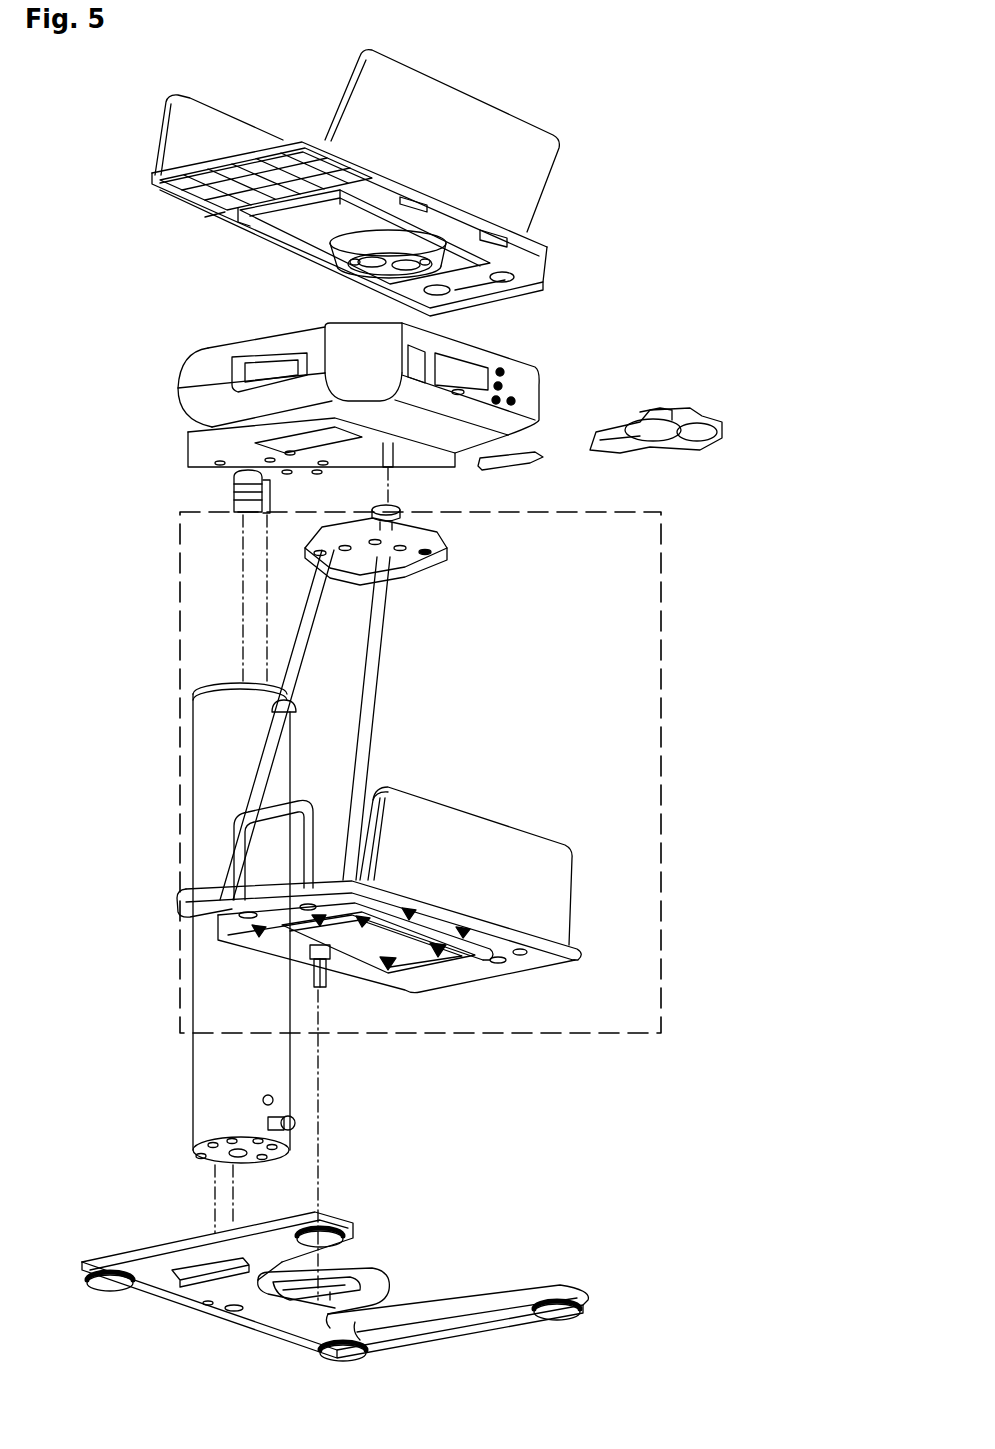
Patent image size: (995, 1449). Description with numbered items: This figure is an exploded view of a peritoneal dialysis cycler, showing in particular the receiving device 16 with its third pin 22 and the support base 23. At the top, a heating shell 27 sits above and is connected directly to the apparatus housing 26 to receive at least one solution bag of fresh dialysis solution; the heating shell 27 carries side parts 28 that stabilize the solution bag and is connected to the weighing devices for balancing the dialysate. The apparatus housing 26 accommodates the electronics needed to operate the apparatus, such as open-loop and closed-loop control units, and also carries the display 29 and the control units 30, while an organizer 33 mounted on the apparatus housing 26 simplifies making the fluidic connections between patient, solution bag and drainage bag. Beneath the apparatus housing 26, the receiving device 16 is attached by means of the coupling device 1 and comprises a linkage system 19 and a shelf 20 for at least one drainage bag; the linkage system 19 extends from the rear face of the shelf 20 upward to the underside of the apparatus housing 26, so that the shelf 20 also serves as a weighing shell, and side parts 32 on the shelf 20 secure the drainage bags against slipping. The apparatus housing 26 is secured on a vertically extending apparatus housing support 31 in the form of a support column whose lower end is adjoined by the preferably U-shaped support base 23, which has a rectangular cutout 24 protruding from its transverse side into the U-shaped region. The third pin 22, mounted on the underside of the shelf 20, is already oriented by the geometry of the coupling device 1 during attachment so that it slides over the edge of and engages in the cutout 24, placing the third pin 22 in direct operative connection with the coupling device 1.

The coupling device 1 is at (395, 506).
The receiving device 16 is at (663, 692).
The linkage system 19 is at (380, 652).
The shelf 20 is at (573, 945).
The third pin 22 is at (330, 977).
The support base 23 is at (507, 1295).
The rectangular cutout 24 is at (340, 1278).
The apparatus housing 26 is at (207, 398).
The heating shell 27 is at (545, 265).
The side parts 28 is at (490, 140).
The display 29 is at (453, 410).
The control units 30 is at (517, 400).
The apparatus housing support 31 is at (202, 1115).
The side parts 32 is at (300, 803).
The organizer 33 is at (717, 433).